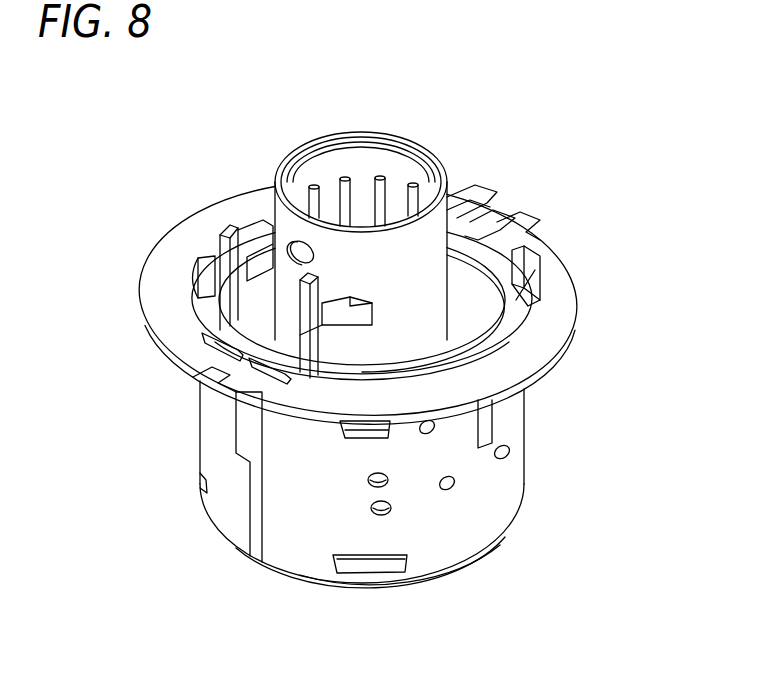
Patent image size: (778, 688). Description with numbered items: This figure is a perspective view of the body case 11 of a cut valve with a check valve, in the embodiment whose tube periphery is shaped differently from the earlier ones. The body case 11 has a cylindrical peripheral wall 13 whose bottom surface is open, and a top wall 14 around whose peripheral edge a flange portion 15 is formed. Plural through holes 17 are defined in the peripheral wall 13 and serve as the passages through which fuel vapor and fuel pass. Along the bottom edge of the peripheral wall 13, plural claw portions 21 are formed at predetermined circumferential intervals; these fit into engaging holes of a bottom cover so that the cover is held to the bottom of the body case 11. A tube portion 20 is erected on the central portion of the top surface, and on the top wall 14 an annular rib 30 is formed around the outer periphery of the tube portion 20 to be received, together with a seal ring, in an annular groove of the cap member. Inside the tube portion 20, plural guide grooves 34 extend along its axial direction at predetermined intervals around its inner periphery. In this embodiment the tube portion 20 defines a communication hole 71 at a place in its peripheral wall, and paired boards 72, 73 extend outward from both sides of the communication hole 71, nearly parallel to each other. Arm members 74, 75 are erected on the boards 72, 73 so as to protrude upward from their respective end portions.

The body case 11 is at (493, 543).
The peripheral wall 13 is at (443, 543).
The top wall 14 is at (540, 281).
The flange portion 15 is at (557, 305).
The through holes 17 is at (453, 482).
The tube portion 20 is at (433, 227).
The claw portions 21 is at (527, 495).
The annular rib 30 is at (473, 262).
The guide grooves 34 is at (361, 186).
The communication hole 71 is at (287, 247).
The board 72 is at (245, 308).
The board 73 is at (327, 358).
The arm member 74 is at (232, 247).
The arm member 75 is at (317, 298).